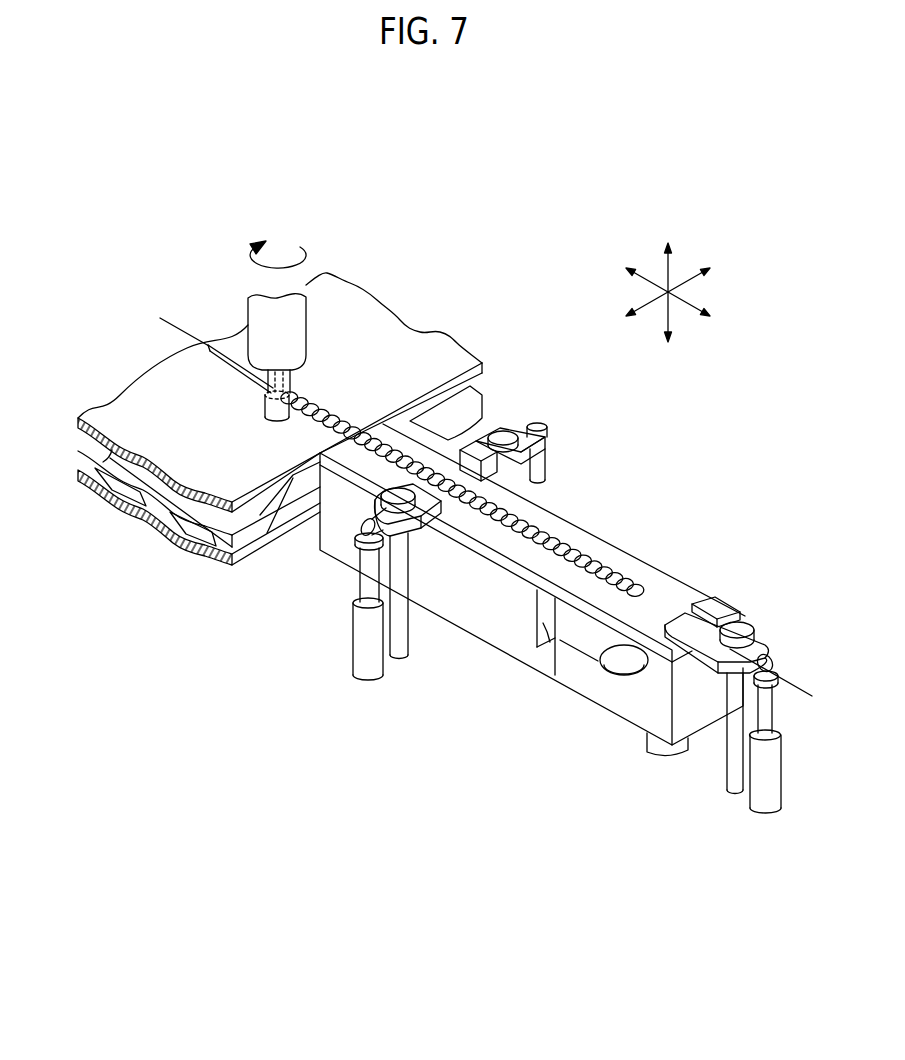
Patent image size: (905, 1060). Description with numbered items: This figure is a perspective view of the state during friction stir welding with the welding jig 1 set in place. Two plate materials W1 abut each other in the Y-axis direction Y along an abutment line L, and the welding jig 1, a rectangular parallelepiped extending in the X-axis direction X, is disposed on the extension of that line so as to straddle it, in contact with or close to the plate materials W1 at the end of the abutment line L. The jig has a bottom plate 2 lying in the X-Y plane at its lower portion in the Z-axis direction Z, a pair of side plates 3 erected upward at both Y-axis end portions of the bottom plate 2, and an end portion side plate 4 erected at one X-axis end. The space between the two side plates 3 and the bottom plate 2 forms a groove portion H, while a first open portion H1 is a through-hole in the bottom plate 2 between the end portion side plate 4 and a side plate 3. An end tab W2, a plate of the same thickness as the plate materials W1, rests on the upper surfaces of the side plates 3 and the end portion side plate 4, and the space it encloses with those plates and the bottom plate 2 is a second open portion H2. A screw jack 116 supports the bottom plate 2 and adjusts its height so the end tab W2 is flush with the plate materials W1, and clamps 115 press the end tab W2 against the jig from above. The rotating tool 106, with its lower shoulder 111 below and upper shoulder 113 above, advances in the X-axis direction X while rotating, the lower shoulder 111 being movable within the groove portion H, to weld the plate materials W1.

The welding jig 1 is at (612, 482).
The bottom plate 2 is at (563, 684).
The side plates 3 is at (473, 597).
The end portion side plate 4 is at (701, 710).
The rotating tool 106 is at (320, 334).
The lower shoulder 111 is at (273, 420).
The upper shoulder 113 is at (308, 312).
The clamps 115 is at (537, 475).
The screw jack 116 is at (654, 752).
The groove portion H is at (585, 660).
The first open portion H1 is at (630, 675).
The second open portion H2 is at (548, 623).
The abutment line L is at (173, 322).
The plate materials W1 is at (427, 357).
The end tab W2 is at (657, 583).
The X-axis direction X is at (678, 302).
The Y-axis direction Y is at (678, 283).
The Z-axis direction Z is at (667, 276).